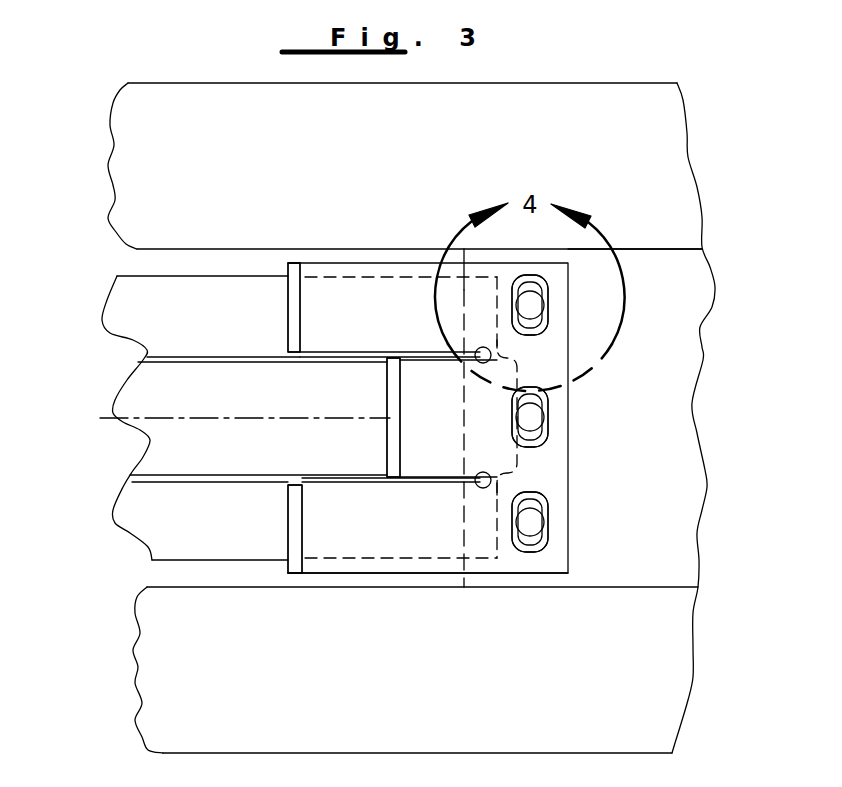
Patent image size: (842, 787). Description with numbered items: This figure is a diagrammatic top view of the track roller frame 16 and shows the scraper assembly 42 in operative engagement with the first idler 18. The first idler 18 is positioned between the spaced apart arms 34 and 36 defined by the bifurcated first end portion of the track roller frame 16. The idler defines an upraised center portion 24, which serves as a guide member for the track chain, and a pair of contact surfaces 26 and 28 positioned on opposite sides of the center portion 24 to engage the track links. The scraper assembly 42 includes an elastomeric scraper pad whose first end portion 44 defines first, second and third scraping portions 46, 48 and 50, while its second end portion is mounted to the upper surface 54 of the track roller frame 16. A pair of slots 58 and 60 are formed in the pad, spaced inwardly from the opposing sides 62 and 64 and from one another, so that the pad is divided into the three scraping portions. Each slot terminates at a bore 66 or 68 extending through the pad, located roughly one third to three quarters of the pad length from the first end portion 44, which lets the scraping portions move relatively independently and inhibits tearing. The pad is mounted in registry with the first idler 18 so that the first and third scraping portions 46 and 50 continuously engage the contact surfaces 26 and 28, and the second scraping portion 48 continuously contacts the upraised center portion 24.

The track roller frame 16 is at (707, 487).
The first idler 18 is at (118, 318).
The upraised center portion 24 is at (169, 401).
The contact surface 26 is at (169, 311).
The contact surface 28 is at (169, 534).
The arm 34 is at (200, 136).
The arm 36 is at (202, 711).
The scraper assembly 42 is at (582, 591).
The first end portion 44 is at (357, 575).
The first scraping portion 46 is at (327, 321).
The second scraping portion 48 is at (410, 431).
The third scraping portion 50 is at (327, 546).
The upper surface 54 is at (652, 301).
The slot 58 is at (433, 348).
The slot 60 is at (437, 482).
The opposing side 62 is at (308, 262).
The opposing side 64 is at (311, 575).
The bore 66 is at (466, 386).
The bore 68 is at (495, 500).